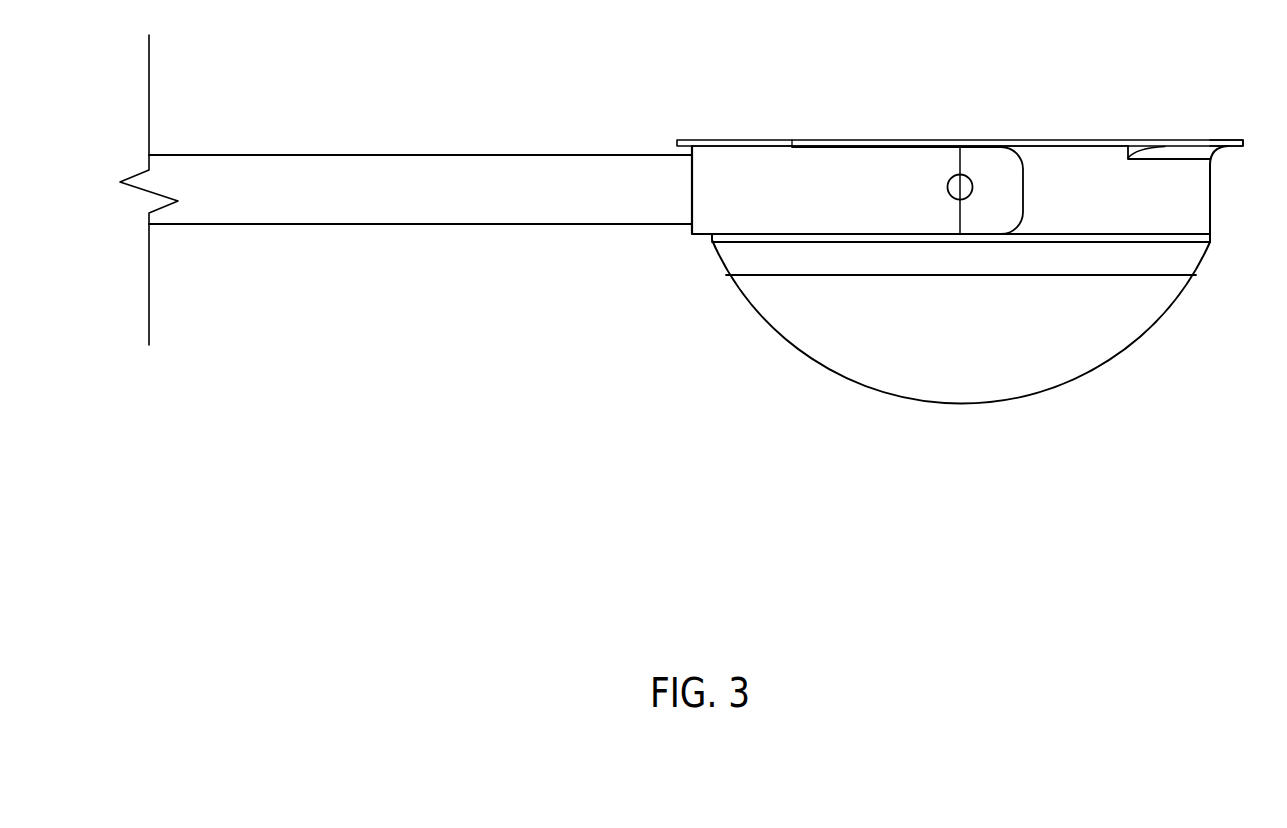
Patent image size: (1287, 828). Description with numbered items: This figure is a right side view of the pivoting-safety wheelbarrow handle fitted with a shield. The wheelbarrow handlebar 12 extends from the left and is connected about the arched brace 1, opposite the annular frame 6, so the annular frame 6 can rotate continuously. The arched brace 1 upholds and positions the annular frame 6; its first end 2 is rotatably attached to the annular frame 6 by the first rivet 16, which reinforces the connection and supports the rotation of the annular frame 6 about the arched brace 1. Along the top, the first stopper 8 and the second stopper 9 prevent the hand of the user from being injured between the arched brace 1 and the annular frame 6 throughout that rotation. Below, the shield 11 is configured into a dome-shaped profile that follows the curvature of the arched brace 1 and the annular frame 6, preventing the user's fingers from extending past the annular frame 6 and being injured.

The arched brace 1 is at (696, 244).
The first end 2 is at (1012, 218).
The annular frame 6 is at (1203, 200).
The first stopper 8 is at (695, 138).
The second stopper 9 is at (1229, 143).
The shield 11 is at (1163, 305).
The wheelbarrow handlebar 12 is at (337, 160).
The first rivet 16 is at (947, 190).